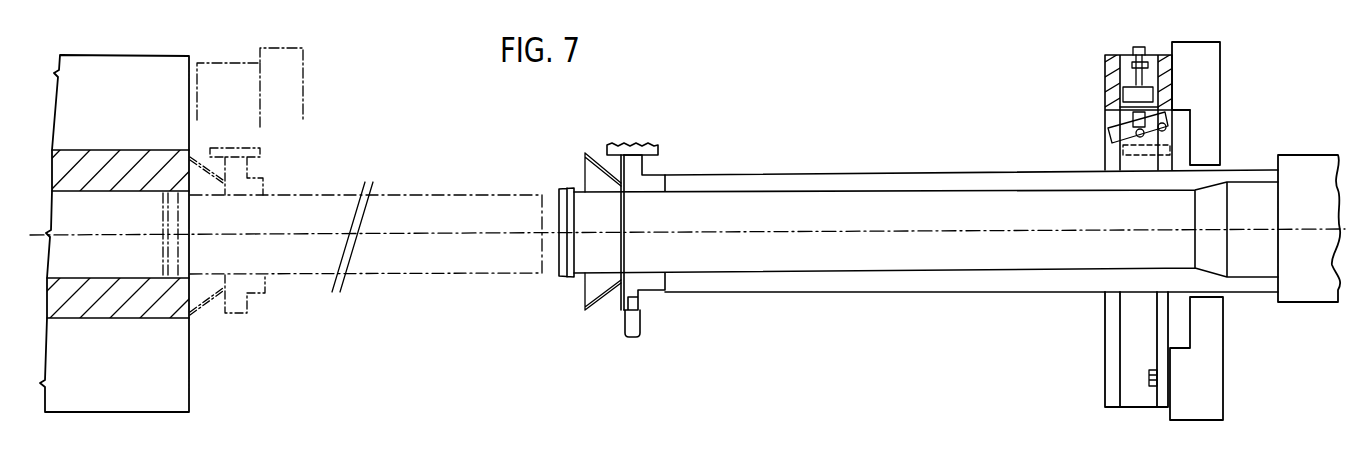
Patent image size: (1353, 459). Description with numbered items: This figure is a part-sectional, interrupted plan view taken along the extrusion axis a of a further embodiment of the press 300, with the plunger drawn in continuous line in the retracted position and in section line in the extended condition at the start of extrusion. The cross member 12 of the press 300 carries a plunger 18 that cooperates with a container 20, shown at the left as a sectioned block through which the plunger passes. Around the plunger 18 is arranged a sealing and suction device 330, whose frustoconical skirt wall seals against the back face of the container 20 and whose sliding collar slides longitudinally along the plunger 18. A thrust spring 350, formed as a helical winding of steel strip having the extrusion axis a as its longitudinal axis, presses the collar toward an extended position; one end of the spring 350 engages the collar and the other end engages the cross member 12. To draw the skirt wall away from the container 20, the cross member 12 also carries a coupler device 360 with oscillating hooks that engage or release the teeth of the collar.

The container 20 is at (132, 170).
The plunger 18 is at (427, 213).
The extrusion axis a is at (452, 237).
The sealing and suction device 330 is at (647, 137).
The thrust spring 350 is at (890, 168).
The coupler device 360 is at (1124, 48).
The press 300 is at (1282, 117).
The cross member 12 is at (1323, 269).